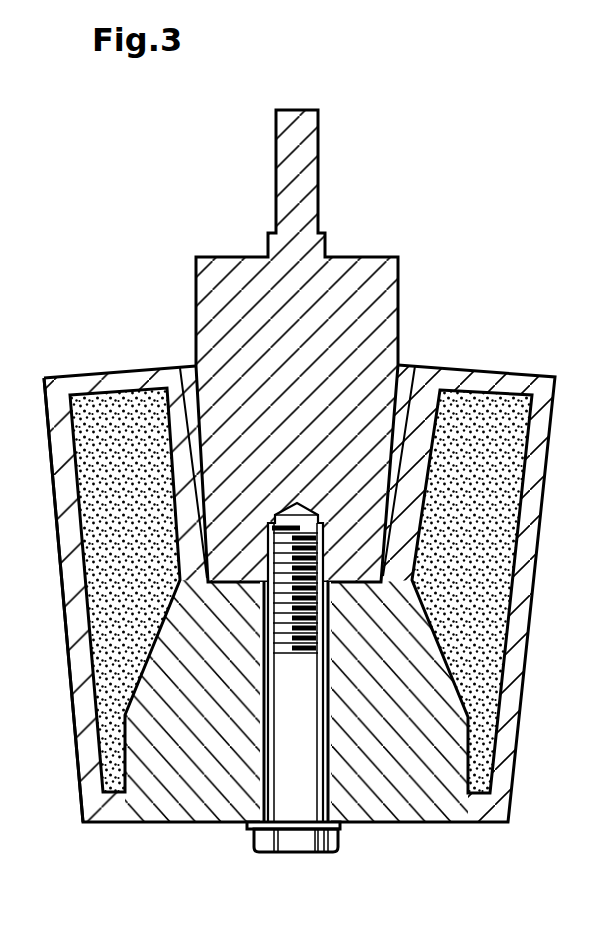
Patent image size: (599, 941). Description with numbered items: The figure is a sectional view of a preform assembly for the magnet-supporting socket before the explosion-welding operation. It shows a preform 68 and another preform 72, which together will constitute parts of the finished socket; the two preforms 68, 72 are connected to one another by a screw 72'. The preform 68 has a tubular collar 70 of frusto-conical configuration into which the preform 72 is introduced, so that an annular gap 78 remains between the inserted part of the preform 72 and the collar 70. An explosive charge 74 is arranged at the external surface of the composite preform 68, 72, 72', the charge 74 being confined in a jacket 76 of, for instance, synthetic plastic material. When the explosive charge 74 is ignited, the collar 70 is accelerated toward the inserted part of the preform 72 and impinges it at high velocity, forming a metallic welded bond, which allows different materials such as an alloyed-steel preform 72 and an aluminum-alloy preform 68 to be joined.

The preform 68 is at (407, 818).
The tubular collar 70 is at (425, 418).
The preform 72 is at (330, 346).
The screw 72' is at (293, 702).
The explosive charge 74 is at (90, 413).
The jacket 76 is at (67, 571).
The annular gap 78 is at (400, 415).